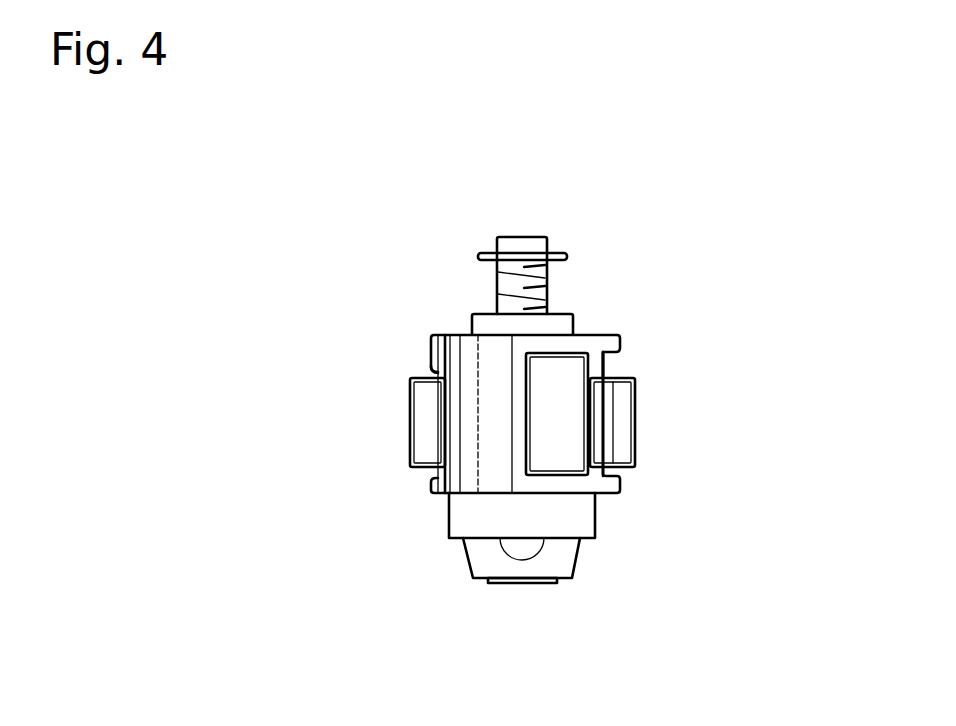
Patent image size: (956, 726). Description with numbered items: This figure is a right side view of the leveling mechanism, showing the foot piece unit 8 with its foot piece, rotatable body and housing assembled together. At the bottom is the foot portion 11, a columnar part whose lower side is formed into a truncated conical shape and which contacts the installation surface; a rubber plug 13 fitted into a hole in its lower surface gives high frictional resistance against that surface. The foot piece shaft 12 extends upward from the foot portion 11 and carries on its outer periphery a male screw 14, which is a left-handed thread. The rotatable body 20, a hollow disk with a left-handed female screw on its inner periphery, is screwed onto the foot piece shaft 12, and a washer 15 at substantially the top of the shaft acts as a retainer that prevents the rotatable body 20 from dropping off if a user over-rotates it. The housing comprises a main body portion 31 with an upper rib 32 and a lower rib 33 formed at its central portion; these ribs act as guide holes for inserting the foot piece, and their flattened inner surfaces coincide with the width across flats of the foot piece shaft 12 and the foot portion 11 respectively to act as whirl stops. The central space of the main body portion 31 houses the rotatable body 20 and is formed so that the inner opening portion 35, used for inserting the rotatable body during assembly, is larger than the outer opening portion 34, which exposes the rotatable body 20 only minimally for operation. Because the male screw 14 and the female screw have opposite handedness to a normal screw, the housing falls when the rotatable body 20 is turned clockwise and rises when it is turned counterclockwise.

The foot piece unit 8 is at (332, 250).
The foot portion 11 is at (480, 562).
The foot piece shaft 12 is at (520, 236).
The rubber plug 13 is at (532, 585).
The male screw 14 is at (500, 288).
The washer 15 is at (479, 257).
The rotatable body 20 is at (422, 425).
The main body portion 31 is at (468, 465).
The upper rib 32 is at (567, 325).
The lower rib 33 is at (585, 517).
The outer opening portion 34 is at (427, 373).
The inner opening portion 35 is at (605, 367).